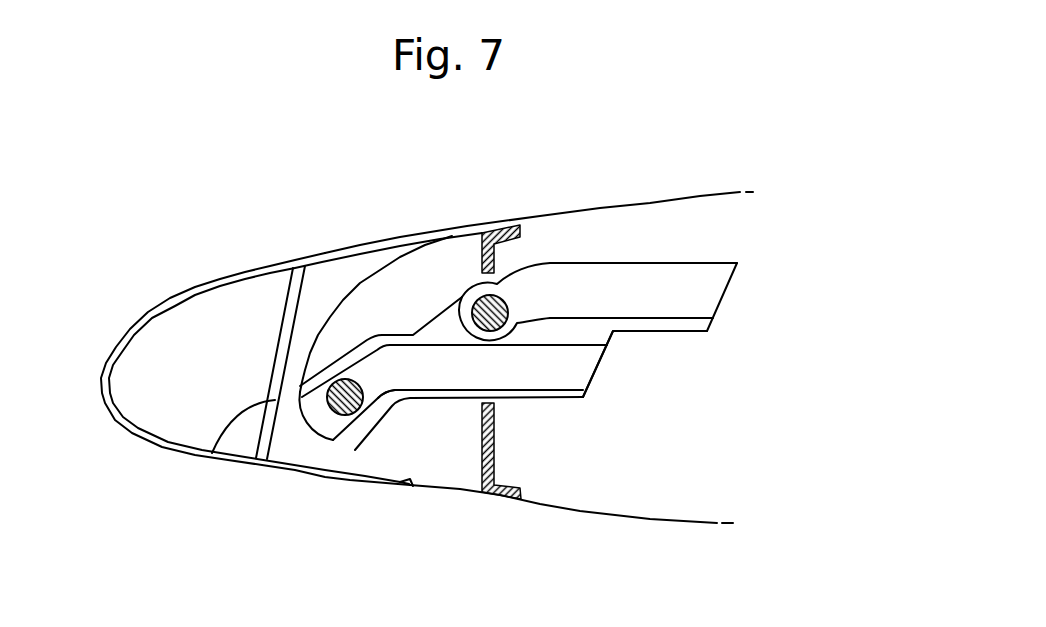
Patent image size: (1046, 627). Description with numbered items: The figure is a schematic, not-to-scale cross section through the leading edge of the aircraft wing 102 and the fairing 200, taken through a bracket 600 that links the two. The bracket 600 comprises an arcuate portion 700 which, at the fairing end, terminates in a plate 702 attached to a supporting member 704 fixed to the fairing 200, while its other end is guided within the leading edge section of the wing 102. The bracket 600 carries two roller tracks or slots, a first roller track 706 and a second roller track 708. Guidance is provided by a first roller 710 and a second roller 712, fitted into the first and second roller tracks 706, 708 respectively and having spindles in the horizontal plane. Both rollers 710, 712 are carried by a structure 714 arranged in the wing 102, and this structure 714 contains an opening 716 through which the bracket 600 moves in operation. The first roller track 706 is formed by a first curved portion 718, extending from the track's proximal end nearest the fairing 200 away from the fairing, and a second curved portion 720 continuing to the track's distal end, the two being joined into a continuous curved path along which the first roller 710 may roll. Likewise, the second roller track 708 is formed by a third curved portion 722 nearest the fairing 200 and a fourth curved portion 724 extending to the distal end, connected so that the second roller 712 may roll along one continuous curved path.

The aircraft wing 102 is at (697, 200).
The fairing 200 is at (148, 312).
The bracket 600 is at (746, 340).
The arcuate portion 700 is at (443, 321).
The plate 702 is at (283, 447).
The supporting member 704 is at (212, 453).
The first roller track 706 is at (392, 358).
The second roller track 708 is at (626, 283).
The first roller 710 is at (333, 415).
The second roller 712 is at (473, 288).
The structure 714 is at (512, 223).
The opening 716 is at (493, 278).
The first curved portion 718 is at (376, 408).
The second curved portion 720 is at (451, 392).
The third curved portion 722 is at (530, 323).
The fourth curved portion 724 is at (653, 263).